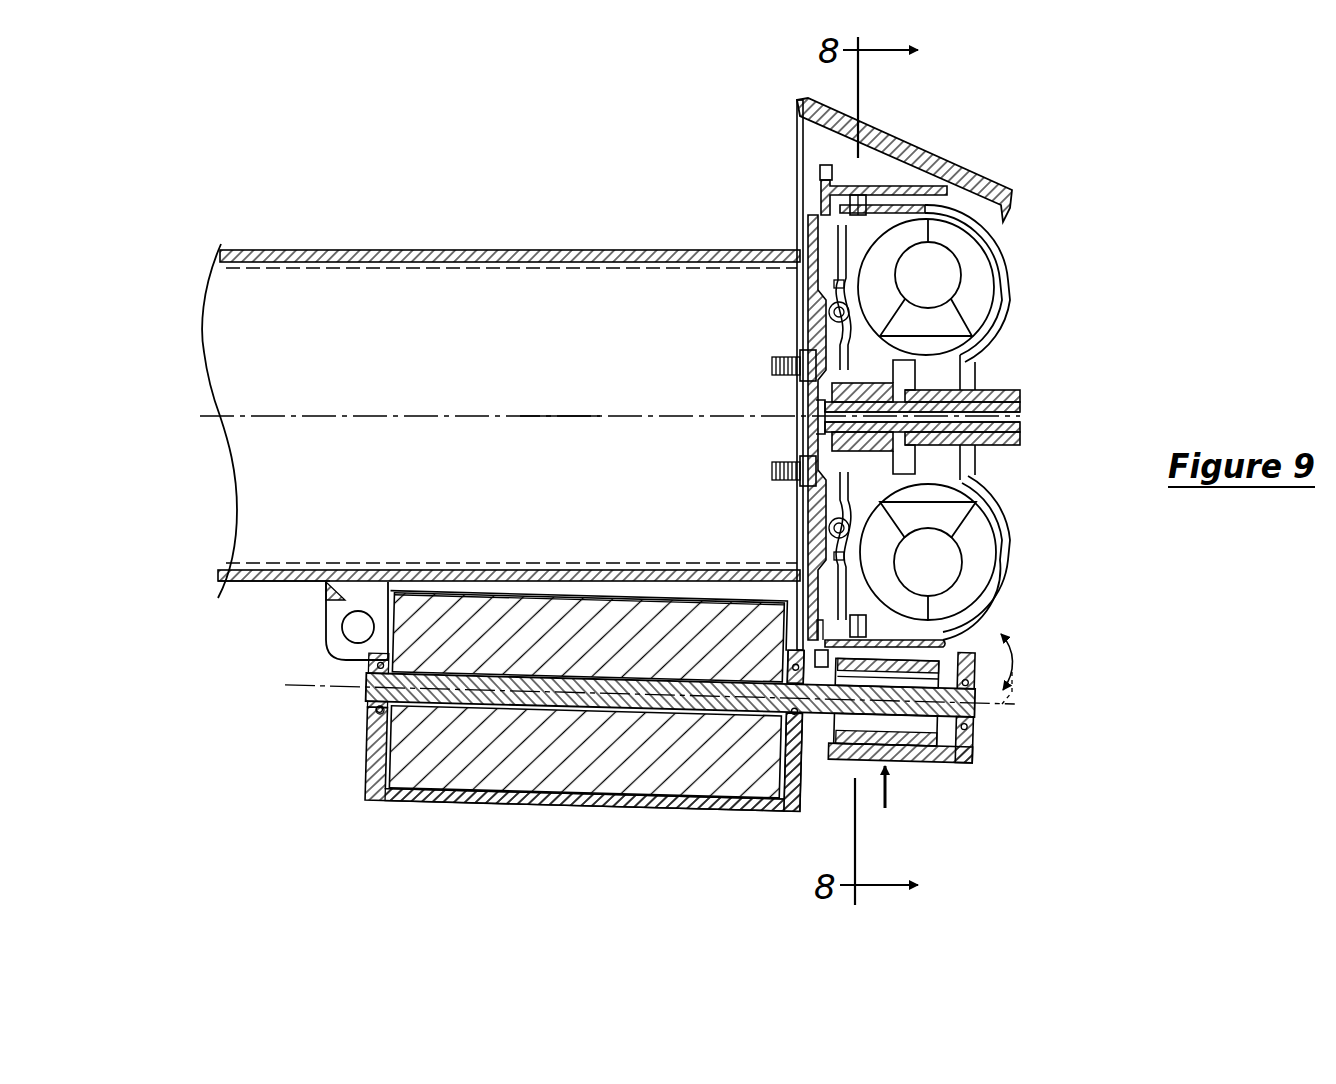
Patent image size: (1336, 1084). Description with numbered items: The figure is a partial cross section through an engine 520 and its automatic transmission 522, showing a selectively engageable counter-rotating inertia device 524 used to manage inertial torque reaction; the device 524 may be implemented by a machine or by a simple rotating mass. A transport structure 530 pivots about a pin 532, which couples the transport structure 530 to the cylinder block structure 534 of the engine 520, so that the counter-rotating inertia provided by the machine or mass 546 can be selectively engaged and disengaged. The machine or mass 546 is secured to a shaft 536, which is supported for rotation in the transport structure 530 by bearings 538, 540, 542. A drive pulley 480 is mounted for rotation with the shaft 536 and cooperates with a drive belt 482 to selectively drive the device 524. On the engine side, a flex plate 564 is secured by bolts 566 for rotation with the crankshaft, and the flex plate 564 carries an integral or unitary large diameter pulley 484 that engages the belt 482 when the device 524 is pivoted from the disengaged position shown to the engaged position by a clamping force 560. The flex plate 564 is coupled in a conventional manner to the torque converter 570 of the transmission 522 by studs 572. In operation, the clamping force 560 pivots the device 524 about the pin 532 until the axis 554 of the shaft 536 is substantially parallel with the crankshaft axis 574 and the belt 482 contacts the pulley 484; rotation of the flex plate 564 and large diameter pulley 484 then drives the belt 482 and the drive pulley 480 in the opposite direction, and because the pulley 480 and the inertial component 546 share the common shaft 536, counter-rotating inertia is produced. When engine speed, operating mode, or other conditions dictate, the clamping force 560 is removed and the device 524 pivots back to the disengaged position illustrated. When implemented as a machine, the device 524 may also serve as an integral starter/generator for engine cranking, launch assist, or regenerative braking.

The engine 520 is at (563, 138).
The transmission 522 is at (940, 103).
The selectively engageable counter-rotating inertia device 524 is at (473, 816).
The transport structure 530 is at (643, 802).
The pin 532 is at (336, 628).
The cylinder block structure 534 is at (241, 586).
The shaft 536 is at (365, 691).
The bearing 538 is at (372, 712).
The bearing 540 is at (802, 722).
The machine or mass 546 is at (600, 654).
The axis of shaft 554 is at (1000, 690).
The clamping force 560 is at (882, 802).
The flex plate 564 is at (797, 250).
The bolts 566 is at (772, 472).
The torque converter 570 is at (960, 215).
The studs 572 is at (797, 205).
The crankshaft axis 574 is at (556, 416).
The drive pulley 480 is at (1010, 645).
The drive belt 482 is at (917, 746).
The large diameter pulley 484 is at (1002, 606).
The bearing 542 is at (976, 727).